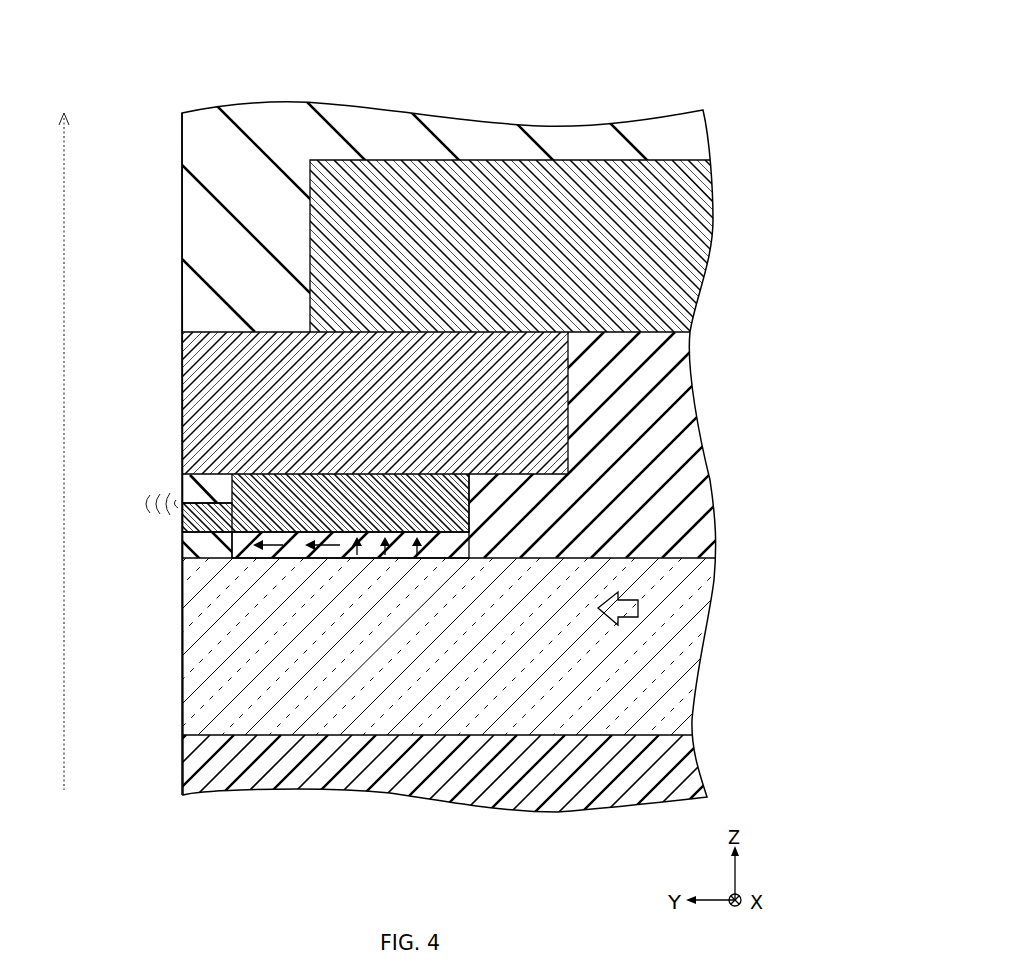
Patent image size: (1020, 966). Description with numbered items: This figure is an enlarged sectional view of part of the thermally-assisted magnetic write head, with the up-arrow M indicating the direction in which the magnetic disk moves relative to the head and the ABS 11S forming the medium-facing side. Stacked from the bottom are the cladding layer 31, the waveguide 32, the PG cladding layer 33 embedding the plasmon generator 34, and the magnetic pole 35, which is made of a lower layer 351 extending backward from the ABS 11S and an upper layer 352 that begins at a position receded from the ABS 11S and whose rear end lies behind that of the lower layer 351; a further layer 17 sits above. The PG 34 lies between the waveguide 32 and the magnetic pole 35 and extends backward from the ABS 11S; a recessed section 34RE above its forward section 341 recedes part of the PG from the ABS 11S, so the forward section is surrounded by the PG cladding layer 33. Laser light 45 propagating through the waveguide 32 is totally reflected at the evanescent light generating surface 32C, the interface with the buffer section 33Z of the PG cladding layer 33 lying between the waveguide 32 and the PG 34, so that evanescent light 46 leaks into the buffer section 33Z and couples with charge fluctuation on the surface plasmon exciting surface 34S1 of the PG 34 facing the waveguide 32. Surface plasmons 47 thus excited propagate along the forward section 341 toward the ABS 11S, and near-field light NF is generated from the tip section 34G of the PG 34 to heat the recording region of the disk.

The insulating layer 17 is at (277, 108).
The magnetic pole 35 is at (583, 52).
The lower layer 351 is at (465, 365).
The upper layer 352 is at (557, 173).
The plasmon generator 34 is at (372, 520).
The recessed section 34RE is at (206, 491).
The near-field light NF is at (141, 505).
The tip section 34G is at (182, 508).
The forward section 341 is at (205, 545).
The PG cladding layer 33 is at (710, 487).
The buffer section 33Z is at (293, 552).
The surface plasmons 47 is at (333, 552).
The evanescent light 46 is at (420, 548).
The surface plasmon exciting surface 34S1 is at (462, 534).
The evanescent light generating surface 32C is at (688, 556).
The waveguide 32 is at (563, 715).
The laser light 45 is at (640, 608).
The cladding layer 31 is at (613, 803).
The ABS 11S is at (182, 796).
The up-arrow M is at (66, 142).